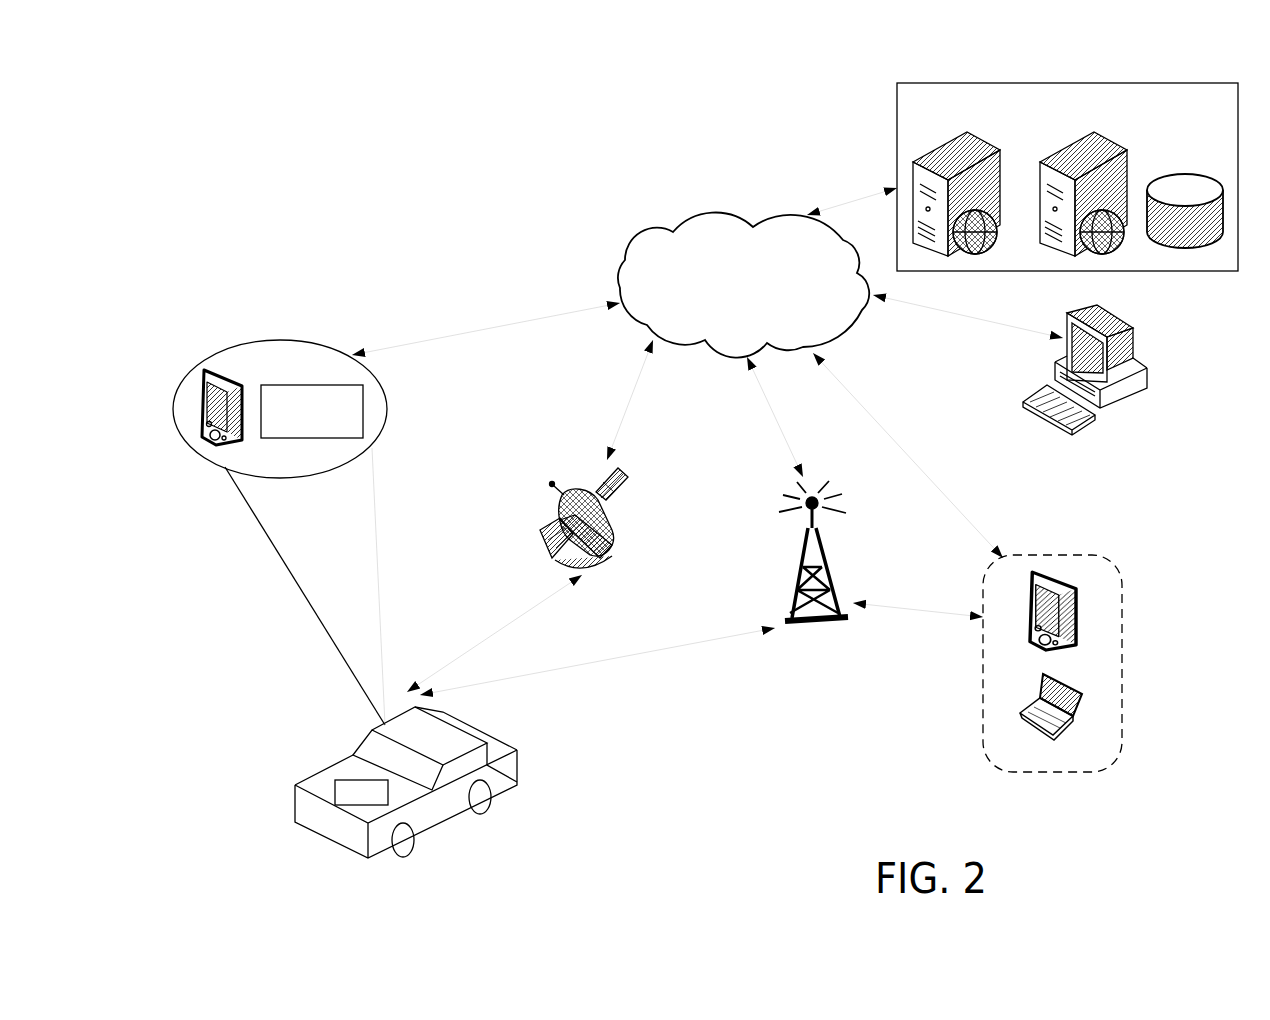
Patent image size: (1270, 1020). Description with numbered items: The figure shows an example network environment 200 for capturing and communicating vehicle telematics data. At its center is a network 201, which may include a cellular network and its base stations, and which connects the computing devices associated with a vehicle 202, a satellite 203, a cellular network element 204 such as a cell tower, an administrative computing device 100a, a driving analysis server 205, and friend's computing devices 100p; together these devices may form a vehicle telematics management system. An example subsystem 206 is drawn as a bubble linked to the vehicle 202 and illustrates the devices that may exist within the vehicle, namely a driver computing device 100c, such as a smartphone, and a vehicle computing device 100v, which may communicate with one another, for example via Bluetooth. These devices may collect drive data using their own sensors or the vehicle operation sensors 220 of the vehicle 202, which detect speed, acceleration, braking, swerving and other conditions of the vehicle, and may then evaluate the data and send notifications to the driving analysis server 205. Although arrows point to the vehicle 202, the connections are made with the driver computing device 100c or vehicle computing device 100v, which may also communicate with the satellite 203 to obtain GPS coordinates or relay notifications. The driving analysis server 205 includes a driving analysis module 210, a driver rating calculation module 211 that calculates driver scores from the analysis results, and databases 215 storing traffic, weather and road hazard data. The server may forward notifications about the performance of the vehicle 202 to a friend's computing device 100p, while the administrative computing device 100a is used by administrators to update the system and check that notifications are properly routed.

The network environment 200 is at (697, 94).
The network 201 is at (727, 307).
The vehicle 202 is at (480, 731).
The satellite 203 is at (568, 483).
The cellular network element 204 is at (832, 579).
The driving analysis server 205 is at (897, 145).
The subsystem 206 is at (285, 340).
The driving analysis module 210 is at (992, 146).
The driver rating calculation module 211 is at (1044, 153).
The database 215 is at (1188, 173).
The vehicle operation sensors 220 is at (346, 803).
The administrative computing device 100a is at (1133, 328).
The driver computing device 100c is at (233, 452).
The friend's computing device 100p is at (1077, 617).
The vehicle computing device 100v is at (312, 411).